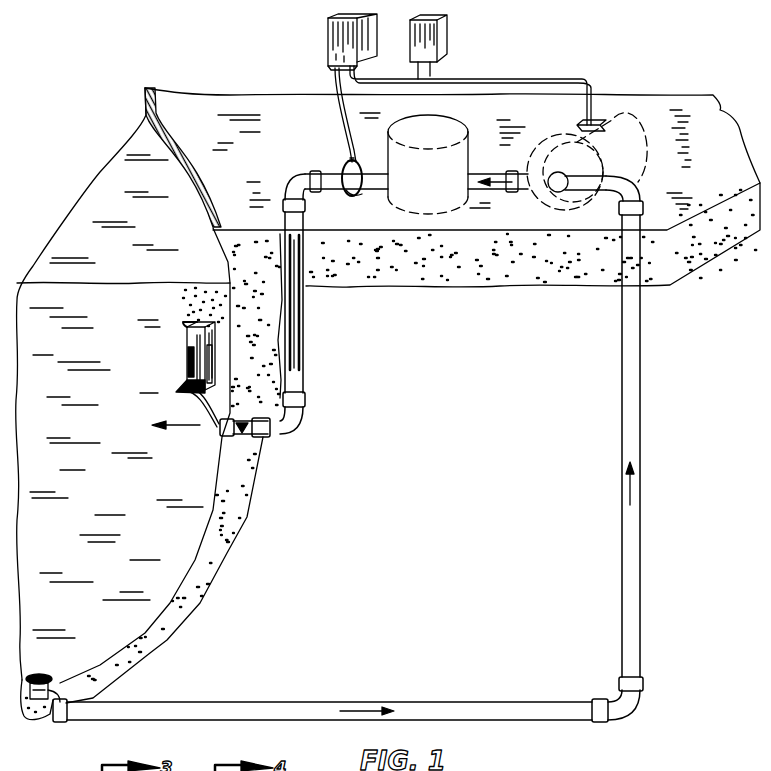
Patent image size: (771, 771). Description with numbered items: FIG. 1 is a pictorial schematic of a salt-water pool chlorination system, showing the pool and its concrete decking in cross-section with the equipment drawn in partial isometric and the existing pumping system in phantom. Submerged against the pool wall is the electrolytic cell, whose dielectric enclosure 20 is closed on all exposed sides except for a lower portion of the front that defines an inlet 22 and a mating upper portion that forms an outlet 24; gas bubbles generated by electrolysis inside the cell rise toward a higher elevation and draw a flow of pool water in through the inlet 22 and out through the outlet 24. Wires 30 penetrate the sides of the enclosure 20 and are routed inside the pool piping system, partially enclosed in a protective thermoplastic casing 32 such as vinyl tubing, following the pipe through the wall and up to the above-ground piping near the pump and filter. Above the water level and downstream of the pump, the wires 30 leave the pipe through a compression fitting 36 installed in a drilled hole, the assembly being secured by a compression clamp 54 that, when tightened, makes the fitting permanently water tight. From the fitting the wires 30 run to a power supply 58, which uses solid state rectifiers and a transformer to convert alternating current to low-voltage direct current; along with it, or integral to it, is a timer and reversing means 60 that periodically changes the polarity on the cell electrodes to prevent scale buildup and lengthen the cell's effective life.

The dielectric enclosure 20 is at (187, 367).
The inlet 22 is at (180, 395).
The outlet 24 is at (188, 329).
The wires 30 is at (336, 82).
The thermoplastic casing 32 is at (304, 333).
The compression fitting 36 is at (348, 165).
The compression clamp 54 is at (356, 196).
The power supply 58 is at (327, 40).
The timer and reversing means 60 is at (447, 37).